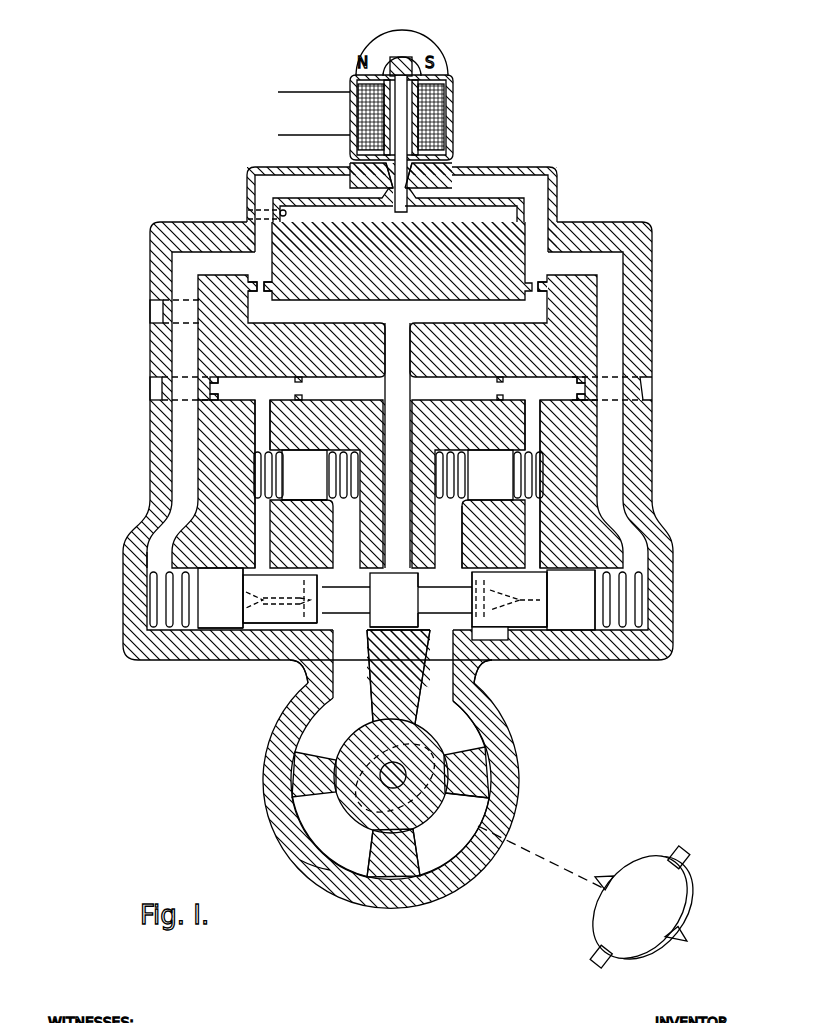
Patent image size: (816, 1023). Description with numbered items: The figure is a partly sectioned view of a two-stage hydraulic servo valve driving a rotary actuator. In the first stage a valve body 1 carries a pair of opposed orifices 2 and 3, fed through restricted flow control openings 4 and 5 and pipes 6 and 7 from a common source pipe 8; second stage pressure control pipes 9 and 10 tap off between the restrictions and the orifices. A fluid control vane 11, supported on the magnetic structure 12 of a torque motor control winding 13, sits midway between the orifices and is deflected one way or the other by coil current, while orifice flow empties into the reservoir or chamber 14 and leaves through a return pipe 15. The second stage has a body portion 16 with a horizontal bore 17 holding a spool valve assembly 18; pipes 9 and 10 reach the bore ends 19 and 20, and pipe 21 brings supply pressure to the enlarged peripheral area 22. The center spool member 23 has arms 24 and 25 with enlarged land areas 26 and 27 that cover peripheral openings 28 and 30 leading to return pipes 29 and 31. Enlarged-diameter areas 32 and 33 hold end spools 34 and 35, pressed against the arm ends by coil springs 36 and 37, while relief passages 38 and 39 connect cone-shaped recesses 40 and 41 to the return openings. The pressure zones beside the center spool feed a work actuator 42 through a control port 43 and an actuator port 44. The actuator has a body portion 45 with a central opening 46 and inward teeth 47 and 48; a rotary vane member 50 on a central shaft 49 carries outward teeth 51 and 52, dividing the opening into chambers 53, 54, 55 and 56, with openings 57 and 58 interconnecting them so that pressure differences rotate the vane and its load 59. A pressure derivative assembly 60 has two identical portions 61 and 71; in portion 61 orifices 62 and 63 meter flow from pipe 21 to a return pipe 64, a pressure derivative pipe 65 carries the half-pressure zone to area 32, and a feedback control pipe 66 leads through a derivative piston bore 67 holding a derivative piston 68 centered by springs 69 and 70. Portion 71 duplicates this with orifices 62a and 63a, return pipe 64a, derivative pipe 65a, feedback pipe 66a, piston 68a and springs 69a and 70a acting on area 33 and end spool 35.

The valve body 1 is at (552, 161).
The orifice 2 is at (386, 182).
The orifice 3 is at (412, 184).
The restricted flow control opening 4 is at (264, 284).
The restricted flow control opening 5 is at (541, 283).
The pipe 6 is at (255, 292).
The pipe 7 is at (460, 324).
The common source pipe 8 is at (150, 310).
The second stage pressure control pipe 9 is at (182, 444).
The second stage pressure control pipe 10 is at (612, 457).
The fluid control vane 11 is at (437, 163).
The magnetic structure 12 is at (455, 130).
The torque motor control winding 13 is at (445, 105).
The reservoir or chamber 14 is at (490, 206).
The return pipe 15 is at (287, 213).
The body portion 16 is at (699, 574).
The horizontal bore 17 is at (430, 574).
The spool valve assembly 18 is at (451, 631).
The end of horizontal bore 19 is at (176, 567).
The end of horizontal bore 20 is at (670, 642).
The pipe 21 is at (386, 335).
The enlarged peripheral area 22 is at (394, 600).
The center spool member 23 is at (405, 610).
The outstanding arm 24 is at (355, 609).
The outstanding arm 25 is at (455, 609).
The enlarged land area 26 is at (293, 592).
The enlarged land area 27 is at (527, 591).
The enlarged peripheral opening 28 is at (320, 580).
The exhaust return pipe 29 is at (296, 661).
The peripheral opening 30 is at (489, 599).
The flow return pipe 31 is at (494, 665).
The area of enlarged diameter 32 is at (199, 628).
The area of enlarged diameter 33 is at (621, 576).
The end spool 34 is at (228, 591).
The end spool 35 is at (582, 606).
The coil spring 36 is at (147, 610).
The coil spring 37 is at (603, 622).
The relief passage 38 is at (300, 612).
The relief passage 39 is at (480, 613).
The cone-shaped recess 40 is at (243, 600).
The cone-shaped recess 41 is at (540, 610).
The work actuator 42 is at (248, 819).
The control port 43 is at (353, 676).
The actuator port 44 is at (434, 677).
The body portion 45 is at (306, 878).
The central opening 46 is at (425, 868).
The tooth 47 is at (416, 835).
The tooth 48 is at (368, 679).
The central shaft 49 is at (570, 872).
The rotary vane member 50 is at (447, 755).
The tooth 51 is at (323, 755).
The tooth 52 is at (456, 797).
The chamber 53 is at (364, 721).
The chamber 54 is at (474, 738).
The chamber 55 is at (331, 821).
The chamber 56 is at (470, 837).
The opening 57 is at (411, 726).
The opening 58 is at (358, 832).
The load 59 is at (683, 924).
The pressure derivative assembly 60 is at (408, 402).
The pressure derivative assembly portion 61 is at (307, 449).
The orifice 62 is at (302, 386).
The orifice 62a is at (497, 386).
The orifice 63 is at (220, 388).
The orifice 63a is at (577, 390).
The return pipe 64 is at (153, 395).
The return pipe 64a is at (645, 395).
The pressure derivative pipe 65 is at (263, 418).
The pressure derivative pipe 65a is at (548, 577).
The feedback control pipe 66 is at (358, 555).
The feedback control pipe 66a is at (492, 534).
The derivative piston bore 67 is at (328, 457).
The derivative piston 68 is at (318, 489).
The derivative piston 68a is at (500, 489).
The centering spring 69 is at (278, 500).
The centering spring 69a is at (469, 475).
The centering spring 70 is at (334, 502).
The centering spring 70a is at (490, 537).
The derivative control portion 71 is at (510, 446).